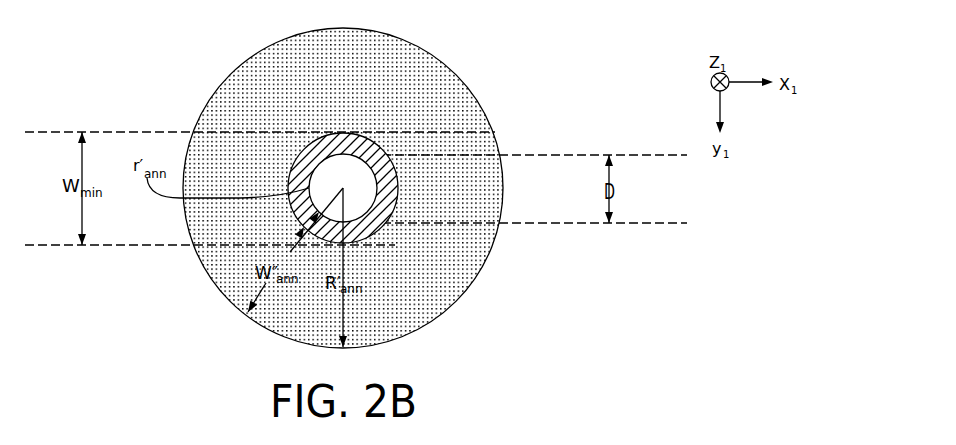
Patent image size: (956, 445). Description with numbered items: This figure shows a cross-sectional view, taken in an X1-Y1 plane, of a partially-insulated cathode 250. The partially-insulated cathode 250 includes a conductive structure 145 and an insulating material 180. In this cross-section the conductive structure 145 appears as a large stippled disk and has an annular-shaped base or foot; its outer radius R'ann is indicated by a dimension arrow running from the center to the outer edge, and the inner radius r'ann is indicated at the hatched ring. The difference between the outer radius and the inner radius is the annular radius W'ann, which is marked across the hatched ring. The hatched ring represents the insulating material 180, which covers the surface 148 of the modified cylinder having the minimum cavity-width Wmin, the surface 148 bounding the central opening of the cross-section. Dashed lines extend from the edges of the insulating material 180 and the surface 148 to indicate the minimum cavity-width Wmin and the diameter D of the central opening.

The partially-insulated cathode 250 is at (535, 105).
The conductive structure 145 is at (497, 232).
The insulating material 180 is at (358, 134).
The surface of the modified cylinder having the minimum cavity-width 148 is at (362, 217).